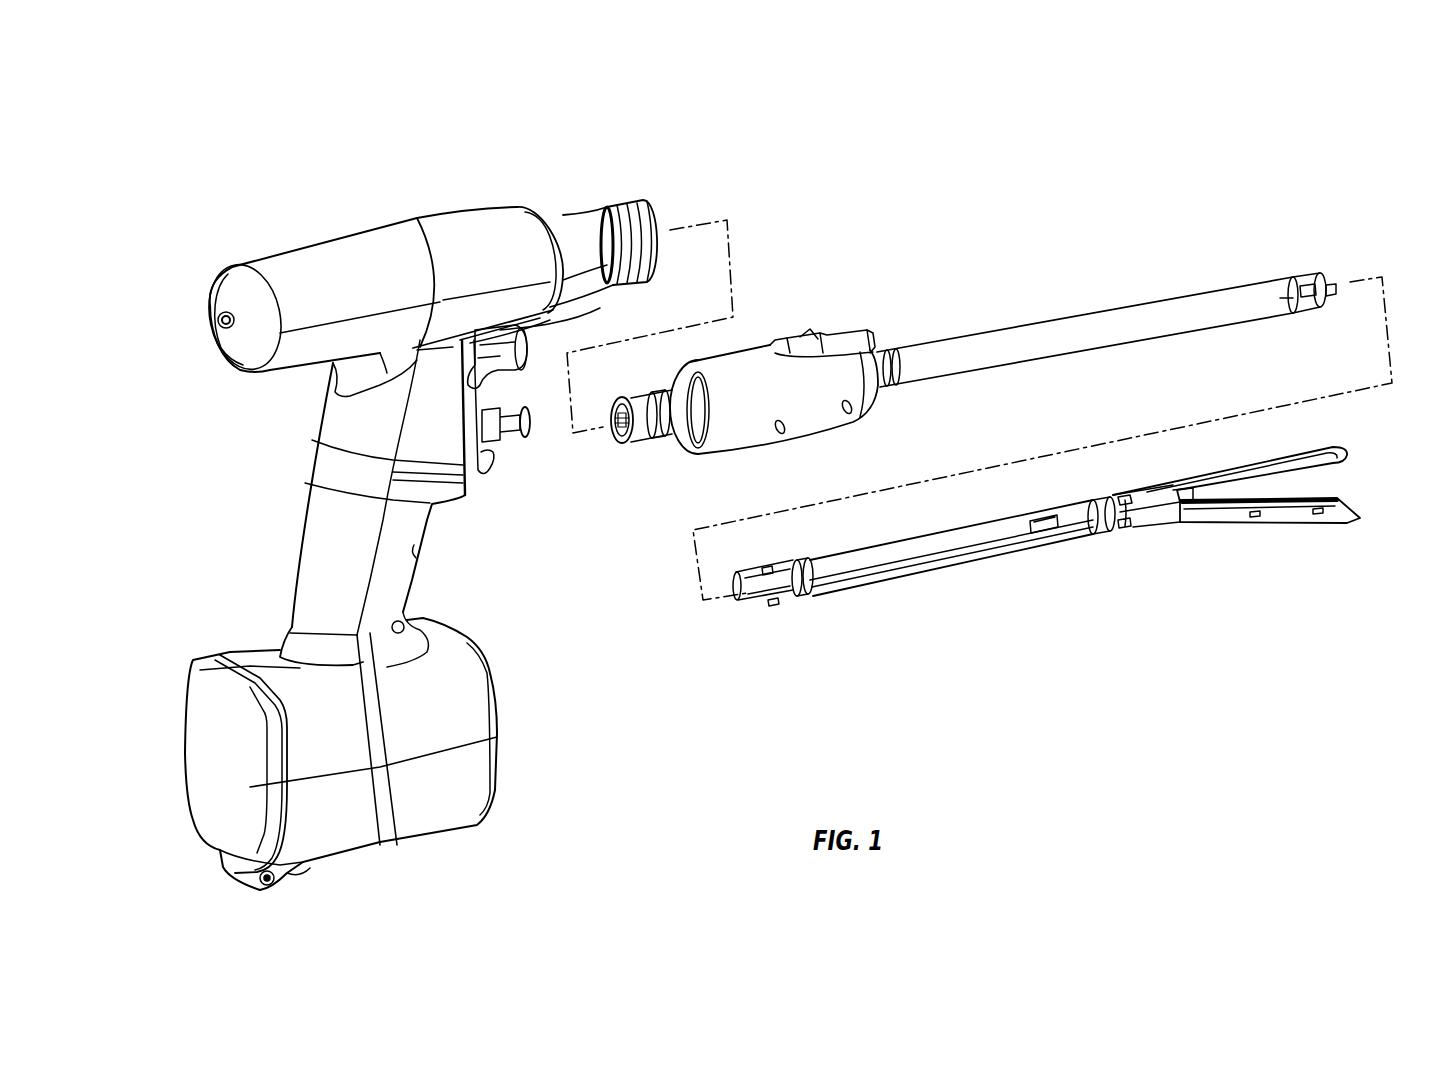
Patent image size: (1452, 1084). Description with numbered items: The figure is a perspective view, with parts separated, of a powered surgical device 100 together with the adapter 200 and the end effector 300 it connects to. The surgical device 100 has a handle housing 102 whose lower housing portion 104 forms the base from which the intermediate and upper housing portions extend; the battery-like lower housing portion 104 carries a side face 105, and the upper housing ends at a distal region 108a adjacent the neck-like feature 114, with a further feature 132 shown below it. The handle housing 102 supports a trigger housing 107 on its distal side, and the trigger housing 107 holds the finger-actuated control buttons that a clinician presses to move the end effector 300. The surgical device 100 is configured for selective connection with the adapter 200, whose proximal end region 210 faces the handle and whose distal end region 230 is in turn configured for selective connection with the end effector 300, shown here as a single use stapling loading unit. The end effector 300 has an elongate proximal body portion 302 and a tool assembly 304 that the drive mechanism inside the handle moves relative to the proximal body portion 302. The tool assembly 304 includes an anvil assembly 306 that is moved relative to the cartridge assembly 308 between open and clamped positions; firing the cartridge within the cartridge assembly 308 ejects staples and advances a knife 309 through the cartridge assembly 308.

The surgical device 100 is at (461, 172).
The handle housing 102 is at (224, 256).
The lower housing portion 104 is at (509, 701).
The battery cover panel 105 is at (207, 720).
The trigger housing 107 is at (482, 502).
The distal threaded connecting portion 108a is at (623, 200).
The connecting neck portion 114 is at (563, 220).
The lower housing portion 132 is at (600, 308).
The adapter 200 is at (917, 327).
The proximal connector of adapter 210 is at (643, 433).
The distal coupling of adapter 230 is at (1304, 275).
The end effector 300 is at (1020, 576).
The proximal body portion 302 is at (867, 588).
The tool assembly 304 is at (1246, 540).
The anvil assembly 306 is at (1340, 447).
The cartridge assembly 308 is at (1340, 521).
The knife 309 is at (1340, 478).